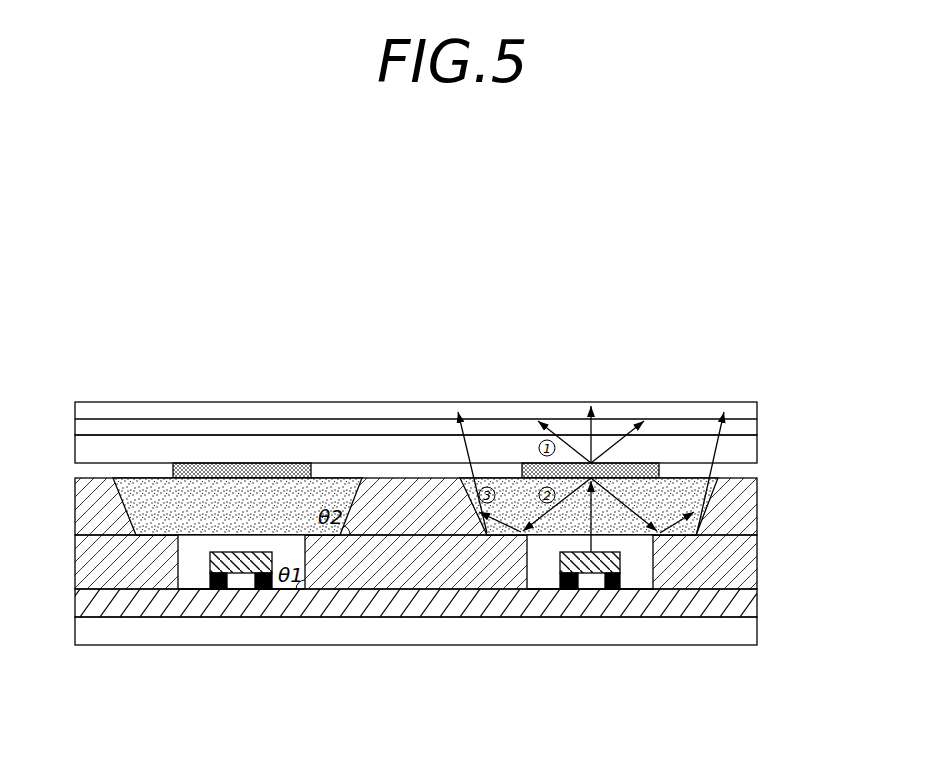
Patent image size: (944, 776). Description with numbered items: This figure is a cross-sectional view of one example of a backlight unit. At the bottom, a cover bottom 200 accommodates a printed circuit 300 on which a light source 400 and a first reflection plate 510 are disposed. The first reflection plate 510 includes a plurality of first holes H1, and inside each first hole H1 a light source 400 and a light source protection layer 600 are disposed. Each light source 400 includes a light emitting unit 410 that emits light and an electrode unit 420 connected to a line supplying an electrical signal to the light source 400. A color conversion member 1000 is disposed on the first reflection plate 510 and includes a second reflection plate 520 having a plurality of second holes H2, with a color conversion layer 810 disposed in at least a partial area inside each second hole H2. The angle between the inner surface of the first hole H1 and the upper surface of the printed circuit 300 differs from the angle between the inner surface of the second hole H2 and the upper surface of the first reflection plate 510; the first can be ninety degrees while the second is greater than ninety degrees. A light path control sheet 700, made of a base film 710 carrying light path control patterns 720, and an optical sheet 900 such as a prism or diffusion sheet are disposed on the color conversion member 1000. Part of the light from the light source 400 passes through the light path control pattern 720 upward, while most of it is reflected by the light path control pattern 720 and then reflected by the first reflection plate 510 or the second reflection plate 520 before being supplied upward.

The optical sheet 900 is at (762, 402).
The light path control sheet 700 is at (477, 459).
The base film 710 is at (745, 448).
The light path control pattern 720 is at (659, 470).
The color conversion member 1000 is at (479, 507).
The color conversion layer 810 is at (695, 502).
The second reflection plate 520 is at (743, 527).
The first reflection plate 510 is at (745, 562).
The light source protection layer 600 is at (195, 589).
The light source 400 is at (415, 643).
The light emitting unit 410 is at (560, 563).
The electrode unit 420 is at (617, 589).
The printed circuit 300 is at (745, 605).
The cover bottom 200 is at (745, 630).
The first hole H1 is at (190, 571).
The second hole H2 is at (143, 509).